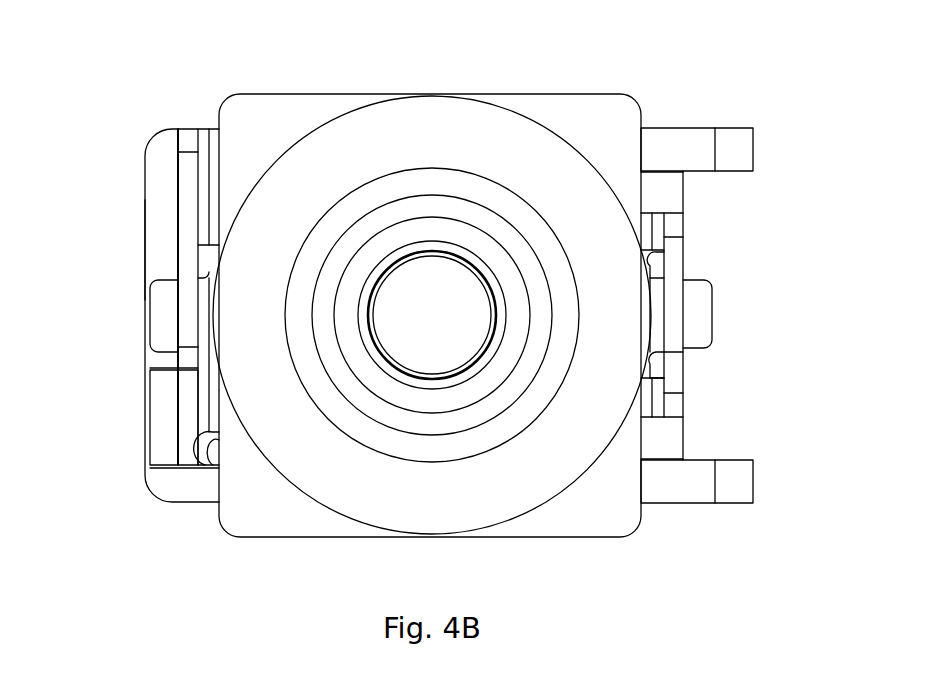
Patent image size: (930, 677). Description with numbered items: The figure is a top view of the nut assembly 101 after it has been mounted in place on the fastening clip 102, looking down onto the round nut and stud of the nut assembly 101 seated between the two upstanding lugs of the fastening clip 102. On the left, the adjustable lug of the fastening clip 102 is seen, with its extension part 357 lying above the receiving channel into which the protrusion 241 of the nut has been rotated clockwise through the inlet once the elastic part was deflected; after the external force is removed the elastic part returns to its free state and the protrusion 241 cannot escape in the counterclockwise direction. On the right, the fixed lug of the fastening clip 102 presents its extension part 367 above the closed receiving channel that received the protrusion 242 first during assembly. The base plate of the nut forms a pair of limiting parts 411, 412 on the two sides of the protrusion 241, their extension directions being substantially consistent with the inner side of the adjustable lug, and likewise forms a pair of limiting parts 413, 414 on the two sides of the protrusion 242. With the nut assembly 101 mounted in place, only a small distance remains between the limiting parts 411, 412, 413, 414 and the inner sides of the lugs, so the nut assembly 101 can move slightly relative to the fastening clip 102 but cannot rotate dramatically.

The nut assembly 101 is at (563, 107).
The fastening clip 102 is at (653, 142).
The limiting part 411 is at (230, 184).
The limiting part 412 is at (226, 465).
The limiting part 413 is at (628, 189).
The limiting part 414 is at (633, 442).
The protrusion 241 is at (172, 284).
The protrusion 242 is at (700, 318).
The extension part 357 is at (185, 314).
The extension part 367 is at (670, 343).